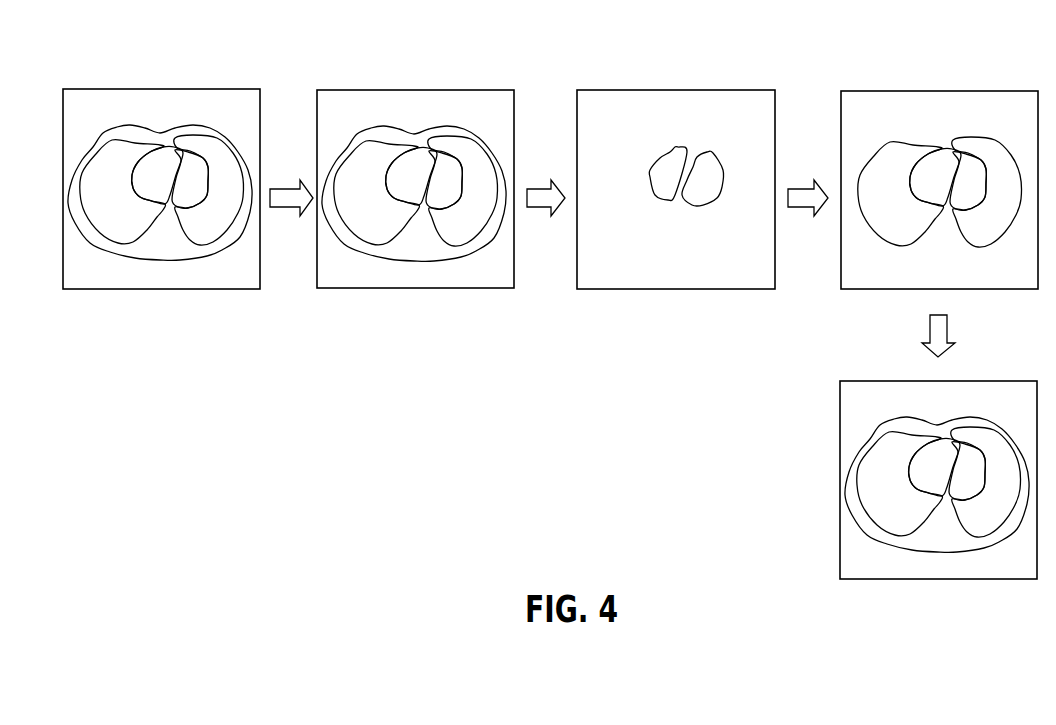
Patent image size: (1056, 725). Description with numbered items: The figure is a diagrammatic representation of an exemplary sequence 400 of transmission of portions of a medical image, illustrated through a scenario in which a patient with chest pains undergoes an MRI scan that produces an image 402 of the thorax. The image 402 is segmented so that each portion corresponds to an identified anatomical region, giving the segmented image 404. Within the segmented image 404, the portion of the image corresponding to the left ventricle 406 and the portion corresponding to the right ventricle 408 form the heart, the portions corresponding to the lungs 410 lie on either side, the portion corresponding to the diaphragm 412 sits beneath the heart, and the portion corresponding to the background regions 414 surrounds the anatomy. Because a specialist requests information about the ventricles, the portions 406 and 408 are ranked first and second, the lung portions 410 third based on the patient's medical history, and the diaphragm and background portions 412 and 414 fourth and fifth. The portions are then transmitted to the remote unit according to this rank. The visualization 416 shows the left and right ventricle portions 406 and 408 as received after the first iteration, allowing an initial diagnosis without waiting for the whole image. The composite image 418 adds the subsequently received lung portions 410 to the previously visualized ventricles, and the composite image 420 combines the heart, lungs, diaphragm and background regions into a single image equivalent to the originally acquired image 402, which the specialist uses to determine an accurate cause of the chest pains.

The sequence of transmission 400 is at (203, 557).
The image 402 is at (88, 88).
The segmented image 404 is at (343, 88).
The portion of the image corresponding to the left ventricle 406 is at (450, 167).
The portion of the image corresponding to the right ventricle 408 is at (400, 166).
The portions of the image corresponding to the lungs 410 is at (472, 220).
The portion of the image corresponding to the diaphragm 412 is at (428, 250).
The portion of the image corresponding to the background regions 414 is at (493, 102).
The visualization of the left and right ventricle portions 416 is at (633, 88).
The composite image 418 is at (868, 90).
The composite image 420 is at (867, 380).